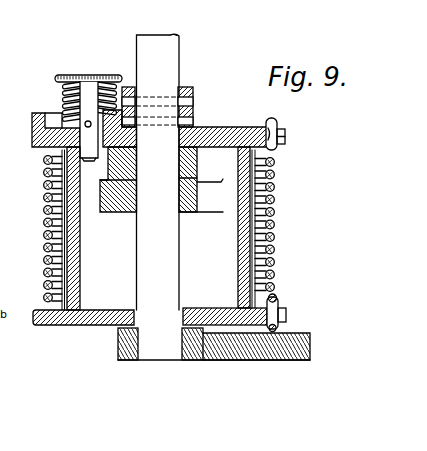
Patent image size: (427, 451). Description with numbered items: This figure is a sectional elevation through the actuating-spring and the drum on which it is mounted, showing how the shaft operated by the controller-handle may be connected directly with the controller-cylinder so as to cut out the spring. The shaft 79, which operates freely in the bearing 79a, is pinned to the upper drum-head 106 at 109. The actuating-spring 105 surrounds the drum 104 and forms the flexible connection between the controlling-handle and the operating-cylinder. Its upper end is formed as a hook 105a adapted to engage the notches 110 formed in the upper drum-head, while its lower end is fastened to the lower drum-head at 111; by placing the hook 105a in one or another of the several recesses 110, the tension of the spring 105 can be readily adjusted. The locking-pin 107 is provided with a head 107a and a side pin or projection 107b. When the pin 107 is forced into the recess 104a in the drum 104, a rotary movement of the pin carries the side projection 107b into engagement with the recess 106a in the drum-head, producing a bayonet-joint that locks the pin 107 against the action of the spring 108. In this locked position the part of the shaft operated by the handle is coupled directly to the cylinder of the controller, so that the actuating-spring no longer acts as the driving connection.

The shaft 79 is at (165, 268).
The bearing 79a is at (213, 362).
The drum 104 is at (81, 278).
The recess 104a is at (87, 205).
The actuating-spring 105 is at (276, 190).
The hook 105a is at (277, 119).
The upper drum-head 106 is at (218, 128).
The recess 106a is at (100, 165).
The locking-pin 107 is at (88, 92).
The head 107a is at (68, 75).
The side pin or projection 107b is at (87, 126).
The spring 108 is at (62, 90).
The pin connection 109 is at (192, 88).
The notches 110 is at (286, 137).
The lower fastening 111 is at (287, 315).